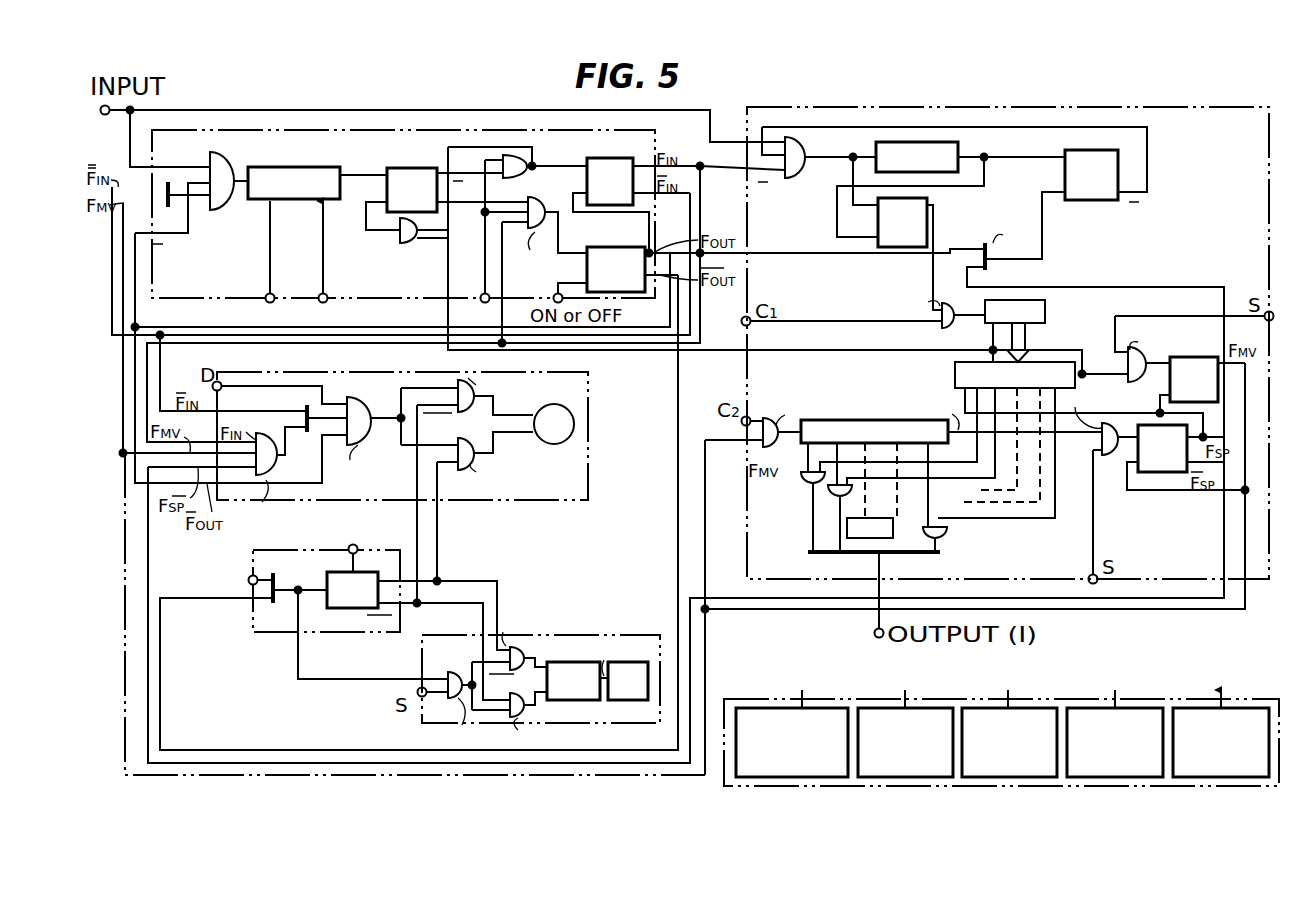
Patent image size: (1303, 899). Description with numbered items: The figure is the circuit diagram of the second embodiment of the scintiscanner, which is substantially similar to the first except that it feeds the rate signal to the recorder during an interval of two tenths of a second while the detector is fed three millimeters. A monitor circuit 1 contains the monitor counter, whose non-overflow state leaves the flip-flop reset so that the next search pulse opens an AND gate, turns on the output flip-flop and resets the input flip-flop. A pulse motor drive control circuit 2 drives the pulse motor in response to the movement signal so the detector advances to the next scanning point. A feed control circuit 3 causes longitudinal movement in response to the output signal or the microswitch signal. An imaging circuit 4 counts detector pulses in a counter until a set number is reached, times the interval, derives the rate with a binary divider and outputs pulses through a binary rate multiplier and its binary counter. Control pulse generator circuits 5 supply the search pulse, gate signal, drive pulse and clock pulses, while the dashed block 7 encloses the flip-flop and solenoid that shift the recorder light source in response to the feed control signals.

The monitor circuit 1 is at (320, 130).
The pulse motor drive control circuit 2 is at (560, 500).
The feed control circuit 3 is at (262, 632).
The imaging circuit 4 is at (912, 107).
The control pulse generator circuits 5 is at (1265, 699).
The search flip-flop circuit 7 is at (594, 634).